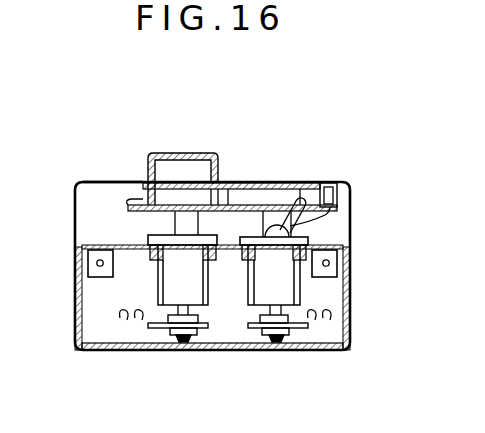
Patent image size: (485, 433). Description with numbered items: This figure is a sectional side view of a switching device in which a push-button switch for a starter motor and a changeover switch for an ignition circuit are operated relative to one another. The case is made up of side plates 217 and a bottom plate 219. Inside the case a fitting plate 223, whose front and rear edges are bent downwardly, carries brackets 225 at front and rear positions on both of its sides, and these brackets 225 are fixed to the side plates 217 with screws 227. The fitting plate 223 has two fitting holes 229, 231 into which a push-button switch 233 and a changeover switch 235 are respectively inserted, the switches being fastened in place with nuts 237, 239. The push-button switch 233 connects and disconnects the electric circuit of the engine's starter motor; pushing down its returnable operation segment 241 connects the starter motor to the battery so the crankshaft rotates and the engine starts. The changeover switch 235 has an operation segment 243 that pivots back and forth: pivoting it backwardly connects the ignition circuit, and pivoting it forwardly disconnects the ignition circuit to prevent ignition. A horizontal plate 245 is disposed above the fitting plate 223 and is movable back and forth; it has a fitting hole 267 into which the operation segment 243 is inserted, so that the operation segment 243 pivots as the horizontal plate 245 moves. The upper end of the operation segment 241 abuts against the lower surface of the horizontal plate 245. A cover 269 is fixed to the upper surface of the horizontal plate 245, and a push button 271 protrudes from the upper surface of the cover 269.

The side plates 217 is at (107, 195).
The bottom plate 219 is at (162, 350).
The fitting plate 223 is at (180, 214).
The brackets 225 is at (80, 306).
The screws 227 is at (92, 263).
The fitting hole 229 is at (160, 283).
The fitting hole 231 is at (262, 255).
The push-button switch 233 is at (143, 193).
The changeover switch 235 is at (265, 252).
The nut 237 is at (148, 283).
The nut 239 is at (335, 277).
The operation segment 241 is at (185, 221).
The operation segment 243 is at (336, 188).
The horizontal plate 245 is at (225, 203).
The fitting hole 267 is at (302, 197).
The cover 269 is at (299, 192).
The push button 271 is at (172, 157).